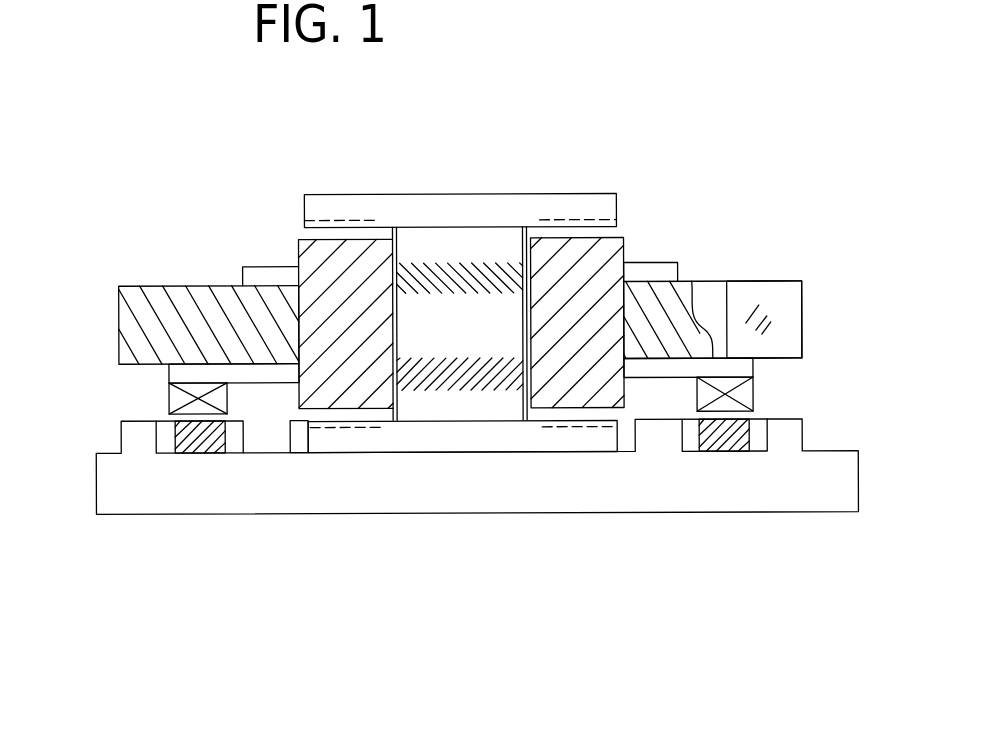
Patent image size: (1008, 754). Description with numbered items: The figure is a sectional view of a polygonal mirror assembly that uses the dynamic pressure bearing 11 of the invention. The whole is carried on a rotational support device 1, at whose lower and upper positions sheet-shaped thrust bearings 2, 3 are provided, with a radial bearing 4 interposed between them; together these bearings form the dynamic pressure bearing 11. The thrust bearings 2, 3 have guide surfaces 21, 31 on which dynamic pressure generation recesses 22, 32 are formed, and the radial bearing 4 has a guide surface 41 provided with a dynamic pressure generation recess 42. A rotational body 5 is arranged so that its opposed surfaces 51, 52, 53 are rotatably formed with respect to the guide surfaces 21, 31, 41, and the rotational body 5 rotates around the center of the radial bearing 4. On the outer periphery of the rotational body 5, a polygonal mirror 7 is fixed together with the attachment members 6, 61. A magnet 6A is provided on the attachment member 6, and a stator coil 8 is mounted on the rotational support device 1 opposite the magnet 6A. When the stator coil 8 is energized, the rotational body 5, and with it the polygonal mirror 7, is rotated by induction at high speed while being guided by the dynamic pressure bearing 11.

The rotational support device 1 is at (777, 493).
The thrust bearing 2 is at (436, 491).
The thrust bearing 3 is at (460, 181).
The radial bearing 4 is at (461, 347).
The rotational body 5 is at (602, 402).
The attachment member 6 is at (195, 293).
The magnet 6A is at (732, 317).
The polygonal mirror 7 is at (758, 292).
The stator coil 8 is at (717, 445).
The dynamic pressure bearing 11 is at (475, 338).
The guide surface 21 is at (282, 422).
The dynamic pressure generation recess 22 is at (328, 430).
The guide surface 31 is at (364, 232).
The dynamic pressure generation recess 32 is at (336, 218).
The guide surface 41 is at (397, 321).
The dynamic pressure generation recess 42 is at (434, 389).
The opposed surface 51 is at (560, 410).
The opposed surface 52 is at (578, 248).
The opposed surface 53 is at (531, 322).
The attachment member 61 is at (262, 266).